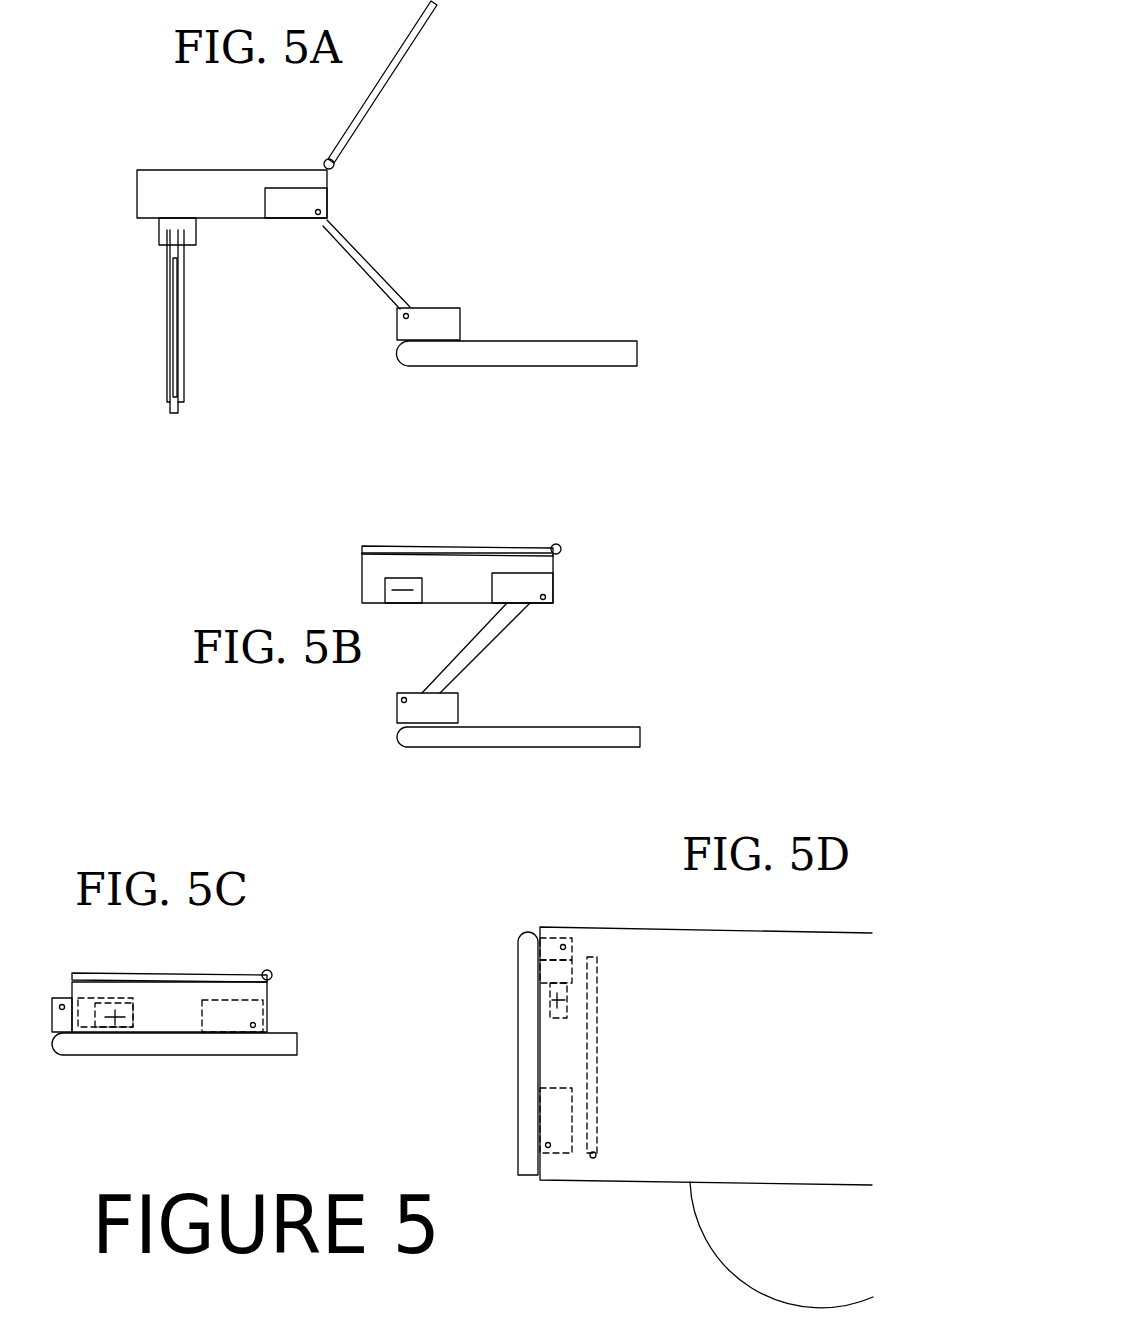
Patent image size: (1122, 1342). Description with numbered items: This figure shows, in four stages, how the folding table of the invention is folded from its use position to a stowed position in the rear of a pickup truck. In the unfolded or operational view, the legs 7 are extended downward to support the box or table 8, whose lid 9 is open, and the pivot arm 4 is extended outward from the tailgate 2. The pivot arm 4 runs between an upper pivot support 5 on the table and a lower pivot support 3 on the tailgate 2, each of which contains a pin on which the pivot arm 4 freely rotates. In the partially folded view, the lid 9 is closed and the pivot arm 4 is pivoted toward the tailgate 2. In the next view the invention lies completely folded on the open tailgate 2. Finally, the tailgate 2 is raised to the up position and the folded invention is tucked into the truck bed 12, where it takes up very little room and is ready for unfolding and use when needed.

In FIG. 5A, the tailgate 2 is at (597, 337).
In FIG. 5B, the tailgate 2 is at (447, 750).
In FIG. 5C, the tailgate 2 is at (170, 1057).
In FIG. 5D, the tailgate 2 is at (515, 1023).
In FIG. 5A, the lower pivot support 3 is at (433, 303).
In FIG. 5A, the pivot arm 4 is at (349, 268).
In FIG. 5A, the upper pivot support 5 is at (288, 210).
In FIG. 5A, the legs 7 is at (190, 322).
In FIG. 5A, the box or table 8 is at (180, 163).
In FIG. 5A, the lid 9 is at (398, 88).
In FIG. 5B, the lid 9 is at (493, 542).
In FIG. 5D, the truck bed 12 is at (677, 923).